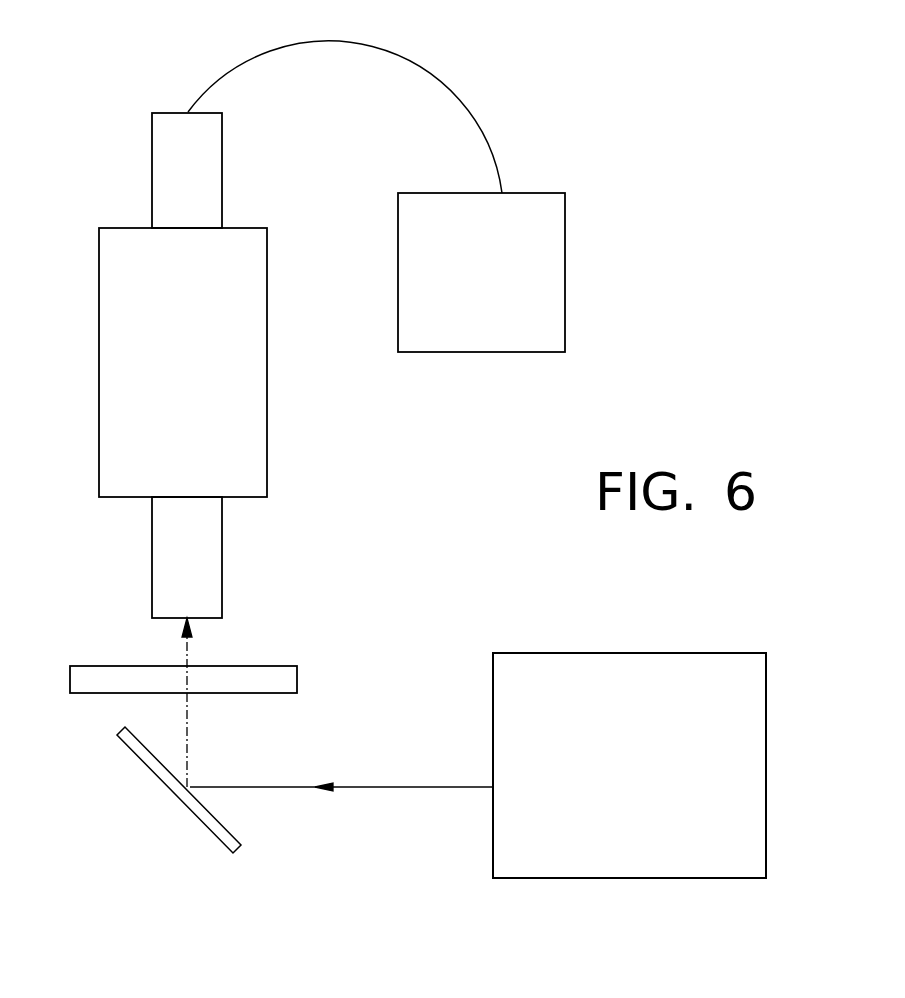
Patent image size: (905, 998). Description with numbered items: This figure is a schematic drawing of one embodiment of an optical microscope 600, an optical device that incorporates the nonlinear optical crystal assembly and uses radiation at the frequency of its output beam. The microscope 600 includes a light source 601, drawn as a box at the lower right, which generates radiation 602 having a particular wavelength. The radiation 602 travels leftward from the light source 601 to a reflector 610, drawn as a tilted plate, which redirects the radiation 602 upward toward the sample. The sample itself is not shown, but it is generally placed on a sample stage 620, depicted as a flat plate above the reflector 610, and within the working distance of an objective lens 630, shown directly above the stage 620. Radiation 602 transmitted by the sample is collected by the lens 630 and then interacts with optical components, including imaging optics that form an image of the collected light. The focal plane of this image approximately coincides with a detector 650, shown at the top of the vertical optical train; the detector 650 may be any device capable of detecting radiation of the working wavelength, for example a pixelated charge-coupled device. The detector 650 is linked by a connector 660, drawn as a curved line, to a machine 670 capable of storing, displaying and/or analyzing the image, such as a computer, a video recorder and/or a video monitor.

The optical microscope 600 is at (673, 345).
The light source 601 is at (570, 712).
The radiation 602 is at (370, 787).
The reflector 610 is at (128, 748).
The sample stage 620 is at (82, 666).
The objective lens 630 is at (152, 557).
The detector 650 is at (152, 173).
The connector 660 is at (466, 105).
The machine 670 is at (99, 303).